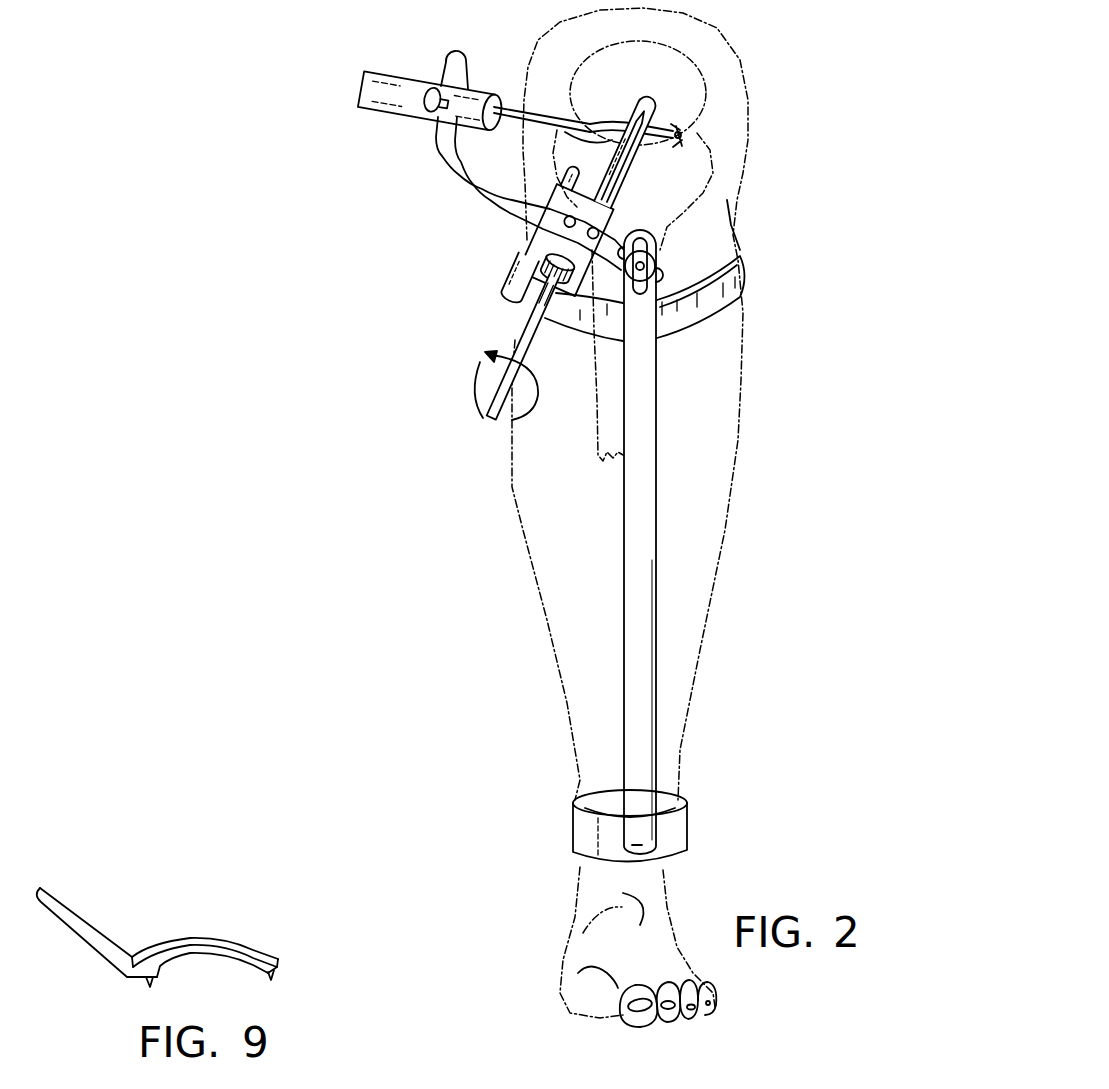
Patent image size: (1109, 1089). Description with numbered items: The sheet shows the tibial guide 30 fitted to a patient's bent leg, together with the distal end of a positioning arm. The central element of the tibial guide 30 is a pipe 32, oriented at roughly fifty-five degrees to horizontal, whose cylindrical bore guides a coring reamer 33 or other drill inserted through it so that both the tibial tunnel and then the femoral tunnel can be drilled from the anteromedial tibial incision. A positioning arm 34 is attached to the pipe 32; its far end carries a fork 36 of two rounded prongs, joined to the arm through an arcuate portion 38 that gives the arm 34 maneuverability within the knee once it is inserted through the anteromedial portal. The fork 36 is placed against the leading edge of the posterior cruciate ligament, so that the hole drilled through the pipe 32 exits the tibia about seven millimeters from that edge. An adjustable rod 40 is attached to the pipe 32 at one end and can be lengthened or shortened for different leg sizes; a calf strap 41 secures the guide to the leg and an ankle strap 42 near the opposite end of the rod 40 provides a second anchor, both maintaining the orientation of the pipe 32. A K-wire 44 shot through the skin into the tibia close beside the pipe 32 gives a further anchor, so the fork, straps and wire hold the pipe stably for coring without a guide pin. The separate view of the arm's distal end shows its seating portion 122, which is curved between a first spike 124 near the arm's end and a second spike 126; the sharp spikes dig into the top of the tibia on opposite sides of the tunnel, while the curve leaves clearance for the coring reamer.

In FIG. 2, the tibial guide 30 is at (504, 238).
In FIG. 2, the pipe 32 is at (560, 296).
In FIG. 2, the coring reamer 33 is at (521, 342).
In FIG. 2, the positioning arm 34 is at (501, 106).
In FIG. 2, the fork 36 is at (684, 134).
In FIG. 2, the arcuate portion 38 is at (650, 113).
In FIG. 2, the adjustable rod 40 is at (632, 544).
In FIG. 2, the calf strap 41 is at (745, 283).
In FIG. 2, the ankle strap 42 is at (678, 843).
In FIG. 2, the K-wire 44 is at (568, 170).
In FIG. 9, the seating portion 122 is at (226, 942).
In FIG. 9, the first spike 124 is at (272, 977).
In FIG. 9, the second spike 126 is at (150, 984).